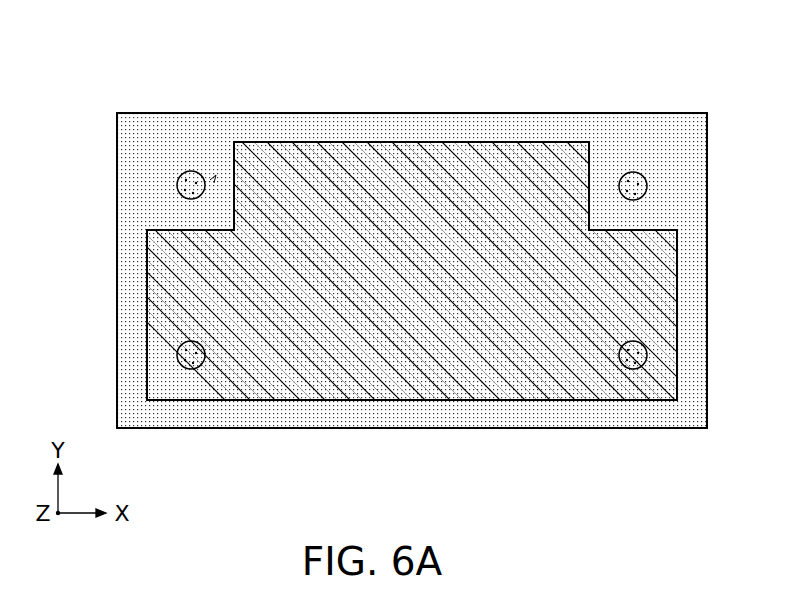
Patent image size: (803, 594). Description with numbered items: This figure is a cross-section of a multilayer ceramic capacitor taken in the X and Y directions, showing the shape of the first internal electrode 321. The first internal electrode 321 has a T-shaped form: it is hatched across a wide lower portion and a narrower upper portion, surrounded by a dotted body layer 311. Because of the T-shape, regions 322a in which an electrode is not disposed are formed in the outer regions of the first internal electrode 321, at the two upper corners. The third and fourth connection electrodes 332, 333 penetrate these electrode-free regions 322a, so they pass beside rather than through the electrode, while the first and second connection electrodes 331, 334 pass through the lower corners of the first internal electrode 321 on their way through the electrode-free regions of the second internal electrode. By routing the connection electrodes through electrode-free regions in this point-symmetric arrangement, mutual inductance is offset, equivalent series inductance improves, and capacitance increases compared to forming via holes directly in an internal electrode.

The first substrate / frame region 311 is at (410, 128).
The first internal electrode 321 is at (502, 158).
The region in which an electrode is not disposed 322a is at (215, 182).
The first connection electrode 331 is at (190, 360).
The third connection electrode 332 is at (189, 178).
The fourth connection electrode 333 is at (635, 180).
The second connection electrode 334 is at (634, 360).